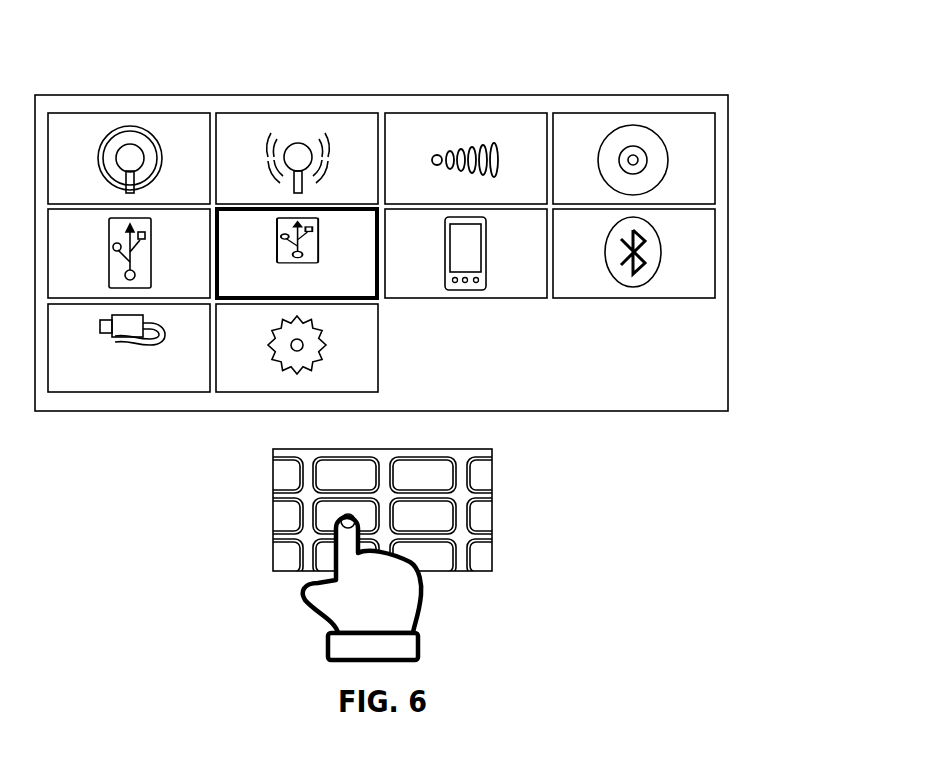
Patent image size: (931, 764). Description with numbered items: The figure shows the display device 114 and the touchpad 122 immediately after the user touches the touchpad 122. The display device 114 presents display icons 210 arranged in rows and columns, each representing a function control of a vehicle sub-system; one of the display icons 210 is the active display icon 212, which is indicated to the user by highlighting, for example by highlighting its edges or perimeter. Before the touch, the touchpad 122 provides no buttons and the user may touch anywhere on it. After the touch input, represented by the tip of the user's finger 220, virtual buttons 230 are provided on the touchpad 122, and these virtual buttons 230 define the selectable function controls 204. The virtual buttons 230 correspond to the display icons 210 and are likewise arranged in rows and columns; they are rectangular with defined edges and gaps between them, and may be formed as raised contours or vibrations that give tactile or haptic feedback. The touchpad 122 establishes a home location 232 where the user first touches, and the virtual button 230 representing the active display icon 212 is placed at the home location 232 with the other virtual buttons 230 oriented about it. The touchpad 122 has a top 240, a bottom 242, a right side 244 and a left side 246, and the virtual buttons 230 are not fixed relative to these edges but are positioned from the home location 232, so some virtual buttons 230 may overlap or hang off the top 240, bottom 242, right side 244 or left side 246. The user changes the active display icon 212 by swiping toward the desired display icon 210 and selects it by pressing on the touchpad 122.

The display device 114 is at (729, 147).
The display icons 210 is at (453, 132).
The active display icon 212 is at (339, 206).
The touchpad 122 is at (493, 517).
The selectable function controls 204 is at (289, 477).
The virtual buttons 230 is at (278, 517).
The left side 246 is at (273, 557).
The top 240 is at (465, 449).
The bottom 242 is at (445, 571).
The right side 244 is at (492, 552).
The home location 232 is at (340, 523).
The tip of the user's finger 220 is at (349, 513).